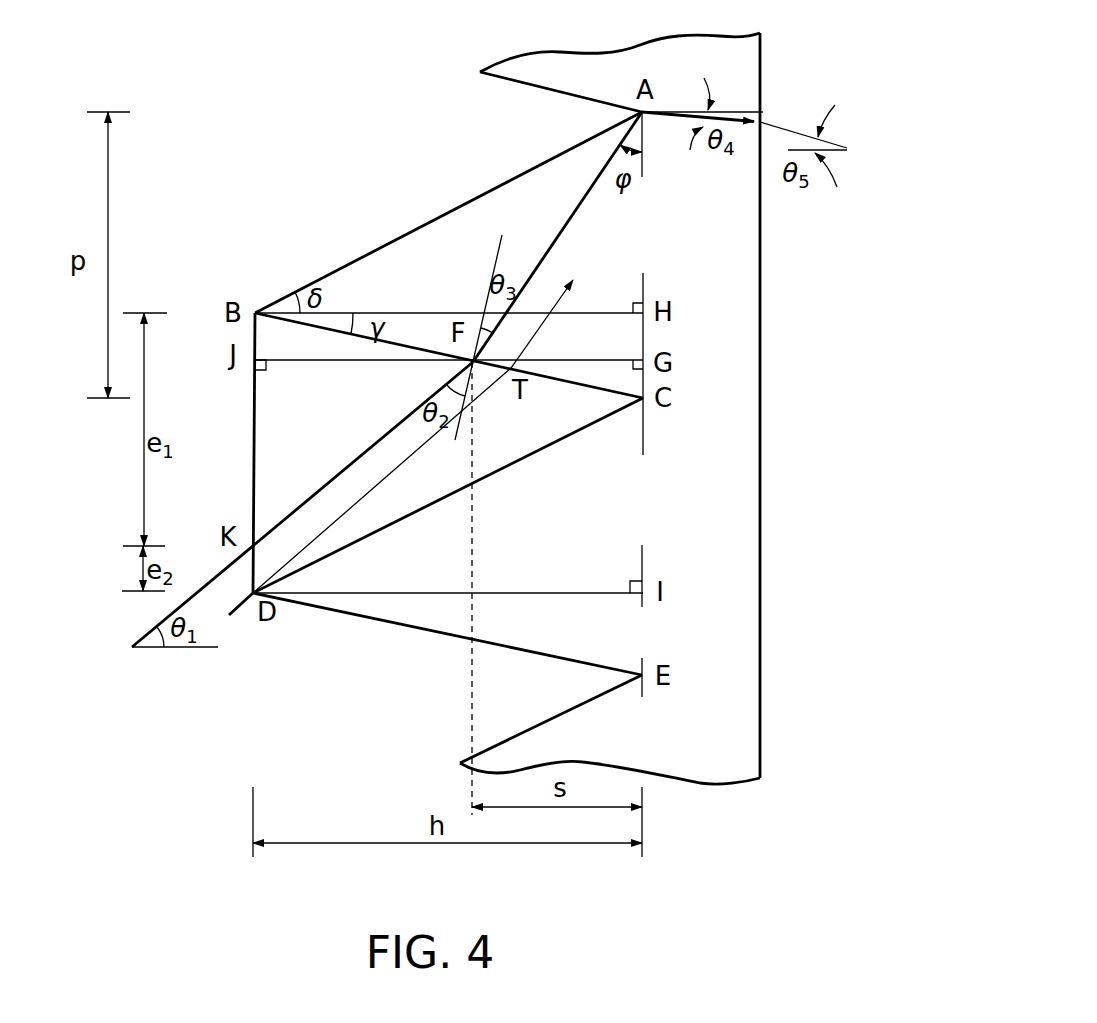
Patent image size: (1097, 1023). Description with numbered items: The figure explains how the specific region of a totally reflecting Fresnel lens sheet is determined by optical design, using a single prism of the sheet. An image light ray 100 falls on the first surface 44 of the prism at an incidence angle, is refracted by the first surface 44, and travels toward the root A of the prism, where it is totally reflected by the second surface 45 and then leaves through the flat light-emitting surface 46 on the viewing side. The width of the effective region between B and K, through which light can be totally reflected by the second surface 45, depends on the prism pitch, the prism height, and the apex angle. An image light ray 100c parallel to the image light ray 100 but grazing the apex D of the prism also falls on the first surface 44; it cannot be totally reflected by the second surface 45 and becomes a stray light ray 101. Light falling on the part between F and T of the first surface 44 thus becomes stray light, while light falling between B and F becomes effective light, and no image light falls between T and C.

The first surface 44 is at (393, 352).
The second surface 45 is at (410, 226).
The light-emitting surface 46 is at (764, 90).
The image light ray 100 is at (173, 607).
The image light ray 100c is at (233, 616).
The stray light ray 101 is at (431, 421).